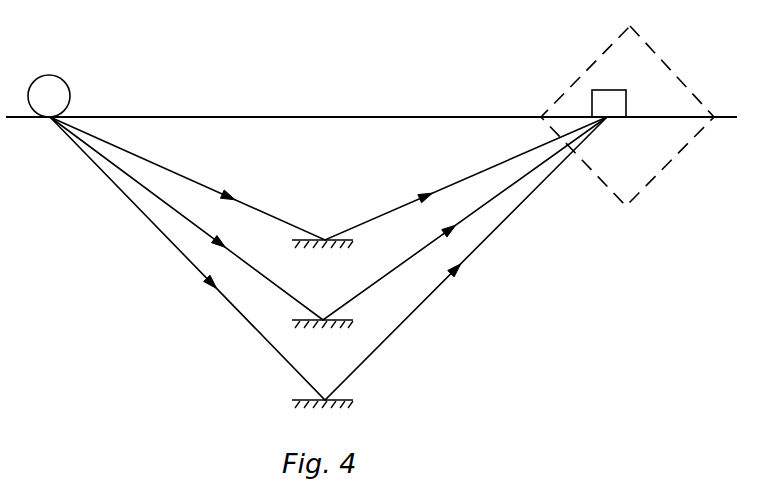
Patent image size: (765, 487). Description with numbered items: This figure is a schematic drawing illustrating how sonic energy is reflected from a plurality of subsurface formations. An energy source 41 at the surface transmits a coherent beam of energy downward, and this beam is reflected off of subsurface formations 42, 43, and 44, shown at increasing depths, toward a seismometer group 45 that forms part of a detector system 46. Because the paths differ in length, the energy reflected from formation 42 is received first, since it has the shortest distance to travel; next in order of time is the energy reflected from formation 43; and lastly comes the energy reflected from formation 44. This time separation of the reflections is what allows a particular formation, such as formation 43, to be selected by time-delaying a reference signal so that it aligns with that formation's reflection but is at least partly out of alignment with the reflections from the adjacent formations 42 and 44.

The energy source 41 is at (46, 89).
The subsurface formation 42 is at (322, 256).
The subsurface formation 43 is at (322, 336).
The subsurface formation 44 is at (322, 417).
The seismometer group 45 is at (605, 100).
The detector system 46 is at (622, 175).